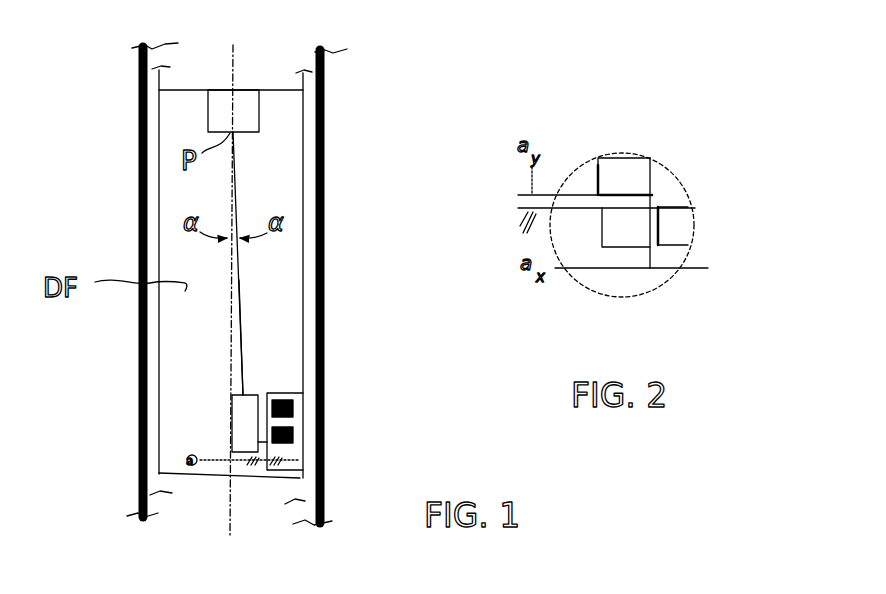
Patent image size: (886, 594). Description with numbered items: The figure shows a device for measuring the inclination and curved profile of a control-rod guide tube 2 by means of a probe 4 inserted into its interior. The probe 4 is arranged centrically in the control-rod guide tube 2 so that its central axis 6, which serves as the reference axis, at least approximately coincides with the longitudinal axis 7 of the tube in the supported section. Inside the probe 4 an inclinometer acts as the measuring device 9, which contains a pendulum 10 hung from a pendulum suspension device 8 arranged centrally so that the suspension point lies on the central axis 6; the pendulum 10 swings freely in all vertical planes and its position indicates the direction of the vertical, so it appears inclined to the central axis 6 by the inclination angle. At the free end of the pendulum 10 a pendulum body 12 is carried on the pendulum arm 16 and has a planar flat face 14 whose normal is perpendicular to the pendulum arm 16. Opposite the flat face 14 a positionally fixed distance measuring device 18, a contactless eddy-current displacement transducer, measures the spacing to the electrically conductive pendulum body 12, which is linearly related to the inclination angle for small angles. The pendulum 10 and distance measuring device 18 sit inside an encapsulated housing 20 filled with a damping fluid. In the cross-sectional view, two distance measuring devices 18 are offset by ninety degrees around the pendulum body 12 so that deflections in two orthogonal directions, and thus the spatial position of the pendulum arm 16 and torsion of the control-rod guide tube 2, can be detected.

In FIG. 1, the control-rod guide tube 2 is at (327, 83).
In FIG. 1, the probe 4 is at (326, 207).
In FIG. 2, the probe 4 is at (645, 297).
In FIG. 1, the central axis 6 is at (237, 280).
In FIG. 1, the longitudinal axis 7 is at (232, 366).
In FIG. 1, the pendulum suspension device 8 is at (252, 119).
In FIG. 1, the measuring device 9 is at (166, 189).
In FIG. 1, the pendulum 10 is at (252, 330).
In FIG. 1, the pendulum body 12 is at (243, 412).
In FIG. 2, the pendulum body 12 is at (637, 218).
In FIG. 1, the flat face 14 is at (293, 443).
In FIG. 1, the pendulum arm 16 is at (242, 300).
In FIG. 1, the distance measuring device 18 is at (287, 422).
In FIG. 2, the distance measuring device 18 is at (625, 163).
In FIG. 1, the encapsulated housing 20 is at (158, 403).